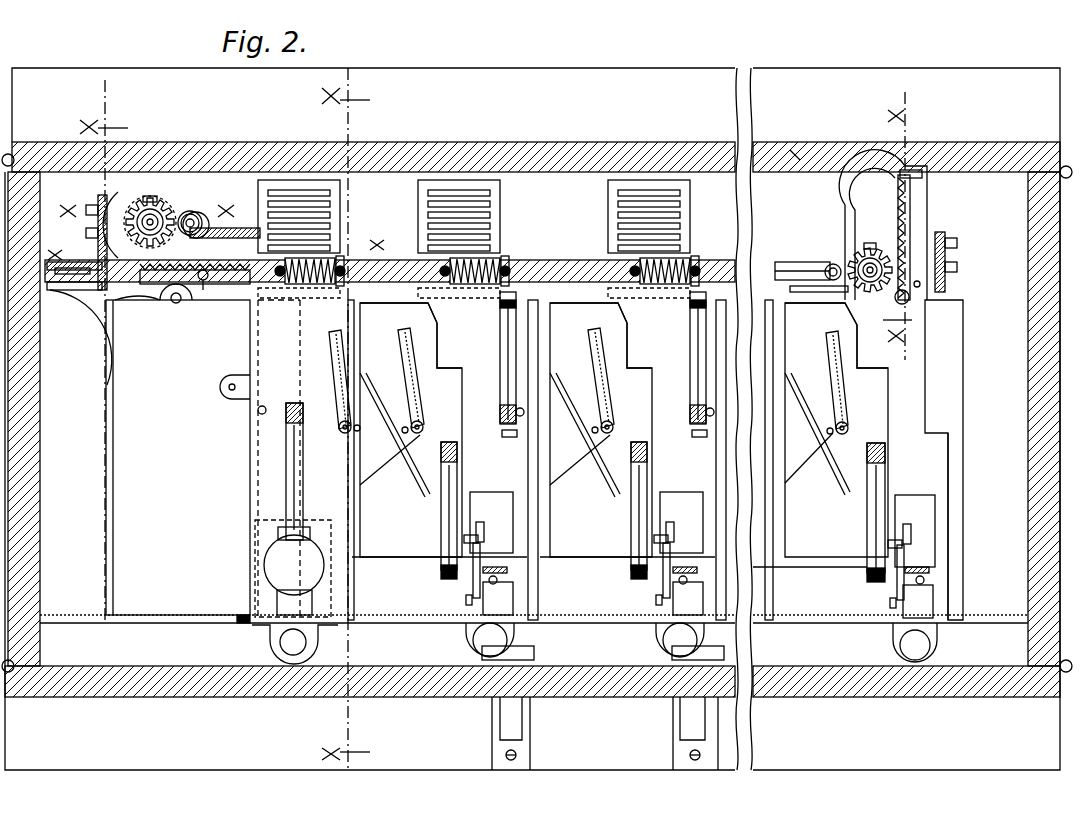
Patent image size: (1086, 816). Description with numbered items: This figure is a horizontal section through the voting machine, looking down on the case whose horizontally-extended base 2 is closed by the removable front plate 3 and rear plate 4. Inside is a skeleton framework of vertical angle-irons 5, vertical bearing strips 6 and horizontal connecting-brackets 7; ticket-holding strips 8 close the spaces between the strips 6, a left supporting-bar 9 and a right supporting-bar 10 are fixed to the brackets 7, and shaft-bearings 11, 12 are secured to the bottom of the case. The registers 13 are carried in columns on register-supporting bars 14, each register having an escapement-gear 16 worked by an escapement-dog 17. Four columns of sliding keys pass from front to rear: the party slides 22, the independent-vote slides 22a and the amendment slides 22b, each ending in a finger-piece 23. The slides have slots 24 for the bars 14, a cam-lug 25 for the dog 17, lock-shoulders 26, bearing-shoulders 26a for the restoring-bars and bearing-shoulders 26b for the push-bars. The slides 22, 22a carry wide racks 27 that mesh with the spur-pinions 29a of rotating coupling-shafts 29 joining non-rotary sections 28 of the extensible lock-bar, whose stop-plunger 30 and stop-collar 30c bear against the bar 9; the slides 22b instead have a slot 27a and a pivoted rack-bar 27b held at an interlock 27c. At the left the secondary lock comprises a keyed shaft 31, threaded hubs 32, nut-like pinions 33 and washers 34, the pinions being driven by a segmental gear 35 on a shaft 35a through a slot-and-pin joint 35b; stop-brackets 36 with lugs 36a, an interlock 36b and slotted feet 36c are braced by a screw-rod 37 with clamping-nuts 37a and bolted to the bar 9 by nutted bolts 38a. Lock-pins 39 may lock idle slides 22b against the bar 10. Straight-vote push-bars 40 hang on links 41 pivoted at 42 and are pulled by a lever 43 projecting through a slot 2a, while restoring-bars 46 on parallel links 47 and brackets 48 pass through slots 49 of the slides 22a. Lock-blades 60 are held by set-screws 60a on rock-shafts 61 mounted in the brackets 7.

The base 2 is at (995, 82).
The slot 2a is at (688, 718).
The front plate 3 is at (768, 708).
The rear plate 4 is at (748, 152).
The vertical angle-iron 5 is at (408, 256).
The vertical bearing strip 6 is at (355, 612).
The horizontal connecting-bracket 7 is at (110, 478).
The ticket-holding strip 8 is at (410, 624).
The supporting-bar 9 is at (88, 292).
The supporting-bar 10 is at (978, 258).
The shaft-bearing 11 is at (159, 209).
The shaft-bearing 12 is at (228, 247).
The register 13 is at (494, 600).
The register-supporting bar 14 is at (485, 565).
The escapement-gear 16 is at (468, 606).
The escapement-dog 17 is at (698, 524).
The register-actuating slide 22 is at (540, 492).
The independent-vote slide 22a is at (262, 494).
The amendment slide 22b is at (950, 486).
The finger-piece 23 is at (268, 648).
The slot 24 is at (488, 490).
The cam-lug 25 is at (470, 536).
The lock-shoulder 26 is at (428, 318).
The bearing-shoulder 26a is at (448, 374).
The bearing-shoulder 26b is at (500, 434).
The rack 27 is at (440, 212).
The slot 27a is at (852, 222).
The rack-bar 27b is at (912, 206).
The interlocking engagement 27c is at (908, 168).
The non-rotary section 28 is at (755, 266).
The coupling-shaft 29 is at (335, 285).
The spur-pinion 29a is at (340, 256).
The stop-plunger 30 is at (95, 300).
The stop-collar 30c is at (176, 252).
The non-rotary shaft 31 is at (866, 282).
The threaded hub 32 is at (162, 214).
The spur-pinion 33 is at (878, 214).
The washer 34 is at (152, 196).
The segmental gear 35 is at (165, 292).
The vertical shaft 35a is at (176, 304).
The slot-and-pin joint 35b is at (205, 282).
The stop-bracket 36 is at (126, 196).
The laterally-offset lug 36a is at (170, 212).
The interlock 36b is at (196, 214).
The slotted foot 36c is at (950, 260).
The screw-rod 37 is at (519, 268).
The clamping-nut 37a is at (200, 216).
The nutted bolt 38a is at (98, 200).
The lock-pin 39 is at (912, 300).
The straight-vote push-bar 40 is at (500, 410).
The link 41 is at (500, 380).
The pivot 42 is at (500, 306).
The straight-vote lever 43 is at (685, 660).
The restoring-bar 46 is at (304, 420).
The parallel link 47 is at (296, 498).
The bracket 48 is at (866, 578).
The slot 49 is at (286, 380).
The lock-blade 60 is at (340, 360).
The set-screw 60a is at (828, 434).
The rock-shaft 61 is at (352, 426).